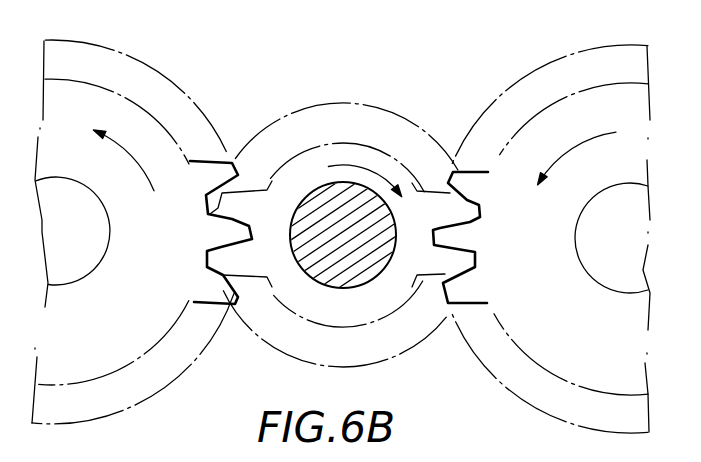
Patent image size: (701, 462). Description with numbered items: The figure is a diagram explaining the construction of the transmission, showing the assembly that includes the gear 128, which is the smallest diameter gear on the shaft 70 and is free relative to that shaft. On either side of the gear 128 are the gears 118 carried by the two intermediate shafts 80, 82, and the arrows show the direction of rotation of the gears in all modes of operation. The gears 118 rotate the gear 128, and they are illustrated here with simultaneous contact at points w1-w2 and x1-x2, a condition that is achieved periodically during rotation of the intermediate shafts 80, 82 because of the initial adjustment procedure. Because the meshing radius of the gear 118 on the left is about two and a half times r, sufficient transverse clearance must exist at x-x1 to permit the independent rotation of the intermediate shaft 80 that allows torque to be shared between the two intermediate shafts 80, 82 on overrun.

The shaft 70 is at (323, 273).
The intermediate shaft 80 is at (63, 268).
The intermediate shaft 82 is at (608, 278).
The gear 118 is at (157, 137).
The gear 128 is at (355, 153).